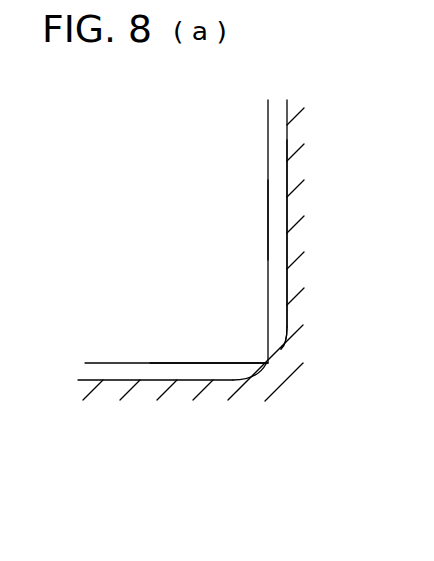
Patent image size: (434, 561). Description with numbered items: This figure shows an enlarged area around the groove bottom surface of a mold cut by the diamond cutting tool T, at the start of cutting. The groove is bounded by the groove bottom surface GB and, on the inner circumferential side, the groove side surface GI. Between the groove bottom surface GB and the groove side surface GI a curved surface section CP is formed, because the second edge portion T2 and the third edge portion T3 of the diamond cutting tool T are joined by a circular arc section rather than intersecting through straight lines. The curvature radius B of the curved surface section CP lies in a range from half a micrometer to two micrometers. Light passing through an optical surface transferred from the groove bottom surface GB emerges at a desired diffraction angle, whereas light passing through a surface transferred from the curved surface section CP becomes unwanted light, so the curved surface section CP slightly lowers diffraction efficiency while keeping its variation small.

The groove side surface GI is at (286, 136).
The second edge portion T2 is at (269, 192).
The third edge portion T3 is at (207, 371).
The groove bottom surface GB is at (129, 380).
The curved surface section CP is at (270, 394).
The curvature radius B is at (280, 349).
The diamond cutting tool T is at (181, 226).